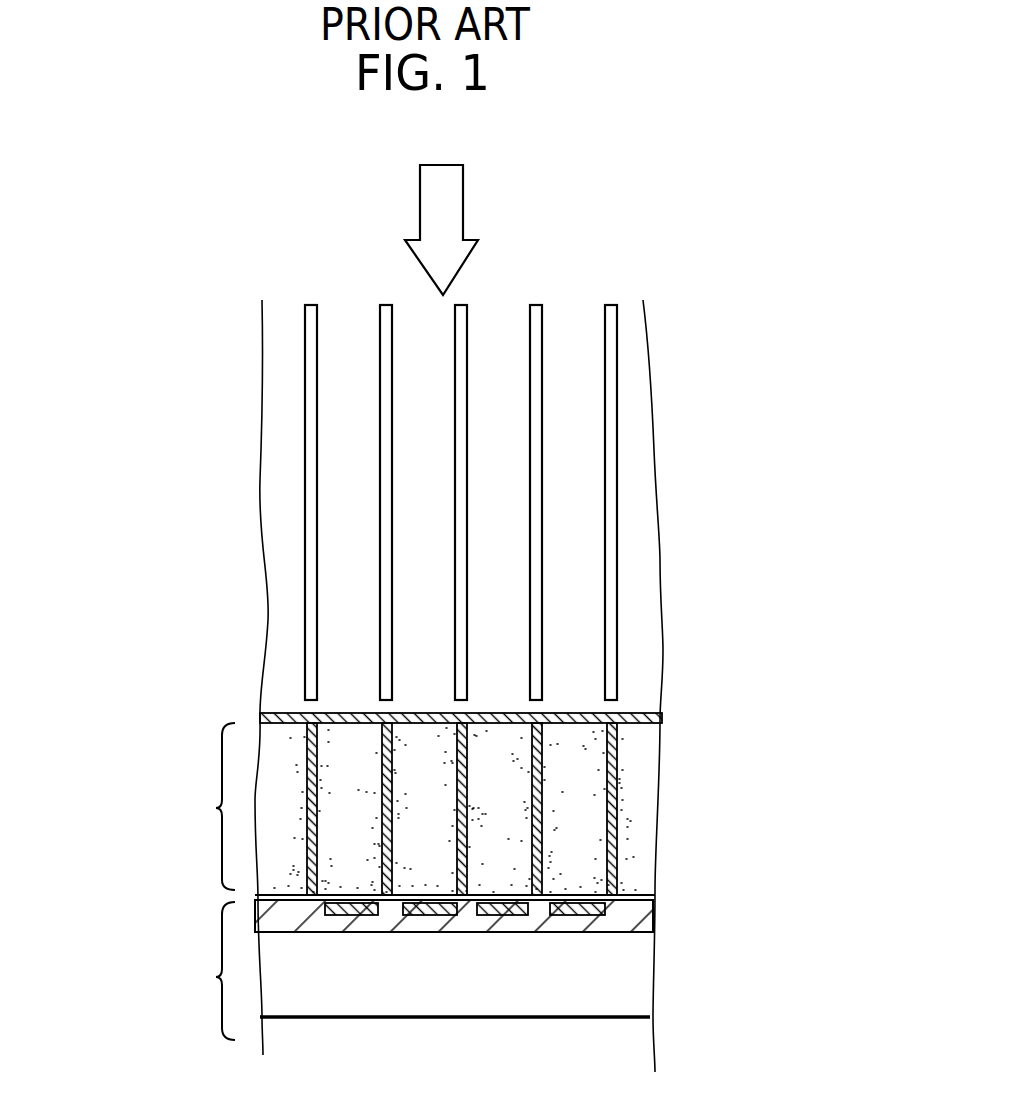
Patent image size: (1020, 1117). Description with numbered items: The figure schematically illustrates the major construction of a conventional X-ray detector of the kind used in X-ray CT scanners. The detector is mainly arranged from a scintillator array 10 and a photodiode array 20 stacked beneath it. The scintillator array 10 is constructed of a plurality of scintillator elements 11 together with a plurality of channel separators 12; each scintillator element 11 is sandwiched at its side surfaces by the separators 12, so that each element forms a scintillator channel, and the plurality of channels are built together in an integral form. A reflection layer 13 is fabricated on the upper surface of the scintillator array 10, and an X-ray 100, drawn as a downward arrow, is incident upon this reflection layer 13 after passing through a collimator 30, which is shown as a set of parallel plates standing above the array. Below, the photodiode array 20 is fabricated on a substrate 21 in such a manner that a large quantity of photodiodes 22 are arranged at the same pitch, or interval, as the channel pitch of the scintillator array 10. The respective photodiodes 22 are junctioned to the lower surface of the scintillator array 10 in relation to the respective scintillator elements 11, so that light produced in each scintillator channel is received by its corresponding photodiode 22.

The X-ray 100 is at (464, 212).
The collimator 30 is at (617, 431).
The reflection layer 13 is at (575, 710).
The scintillator array 10 is at (212, 829).
The scintillator element 11 is at (648, 836).
The channel separator 12 is at (540, 784).
The photodiode array 20 is at (212, 999).
The photodiode 22 is at (498, 930).
The substrate 21 is at (372, 993).